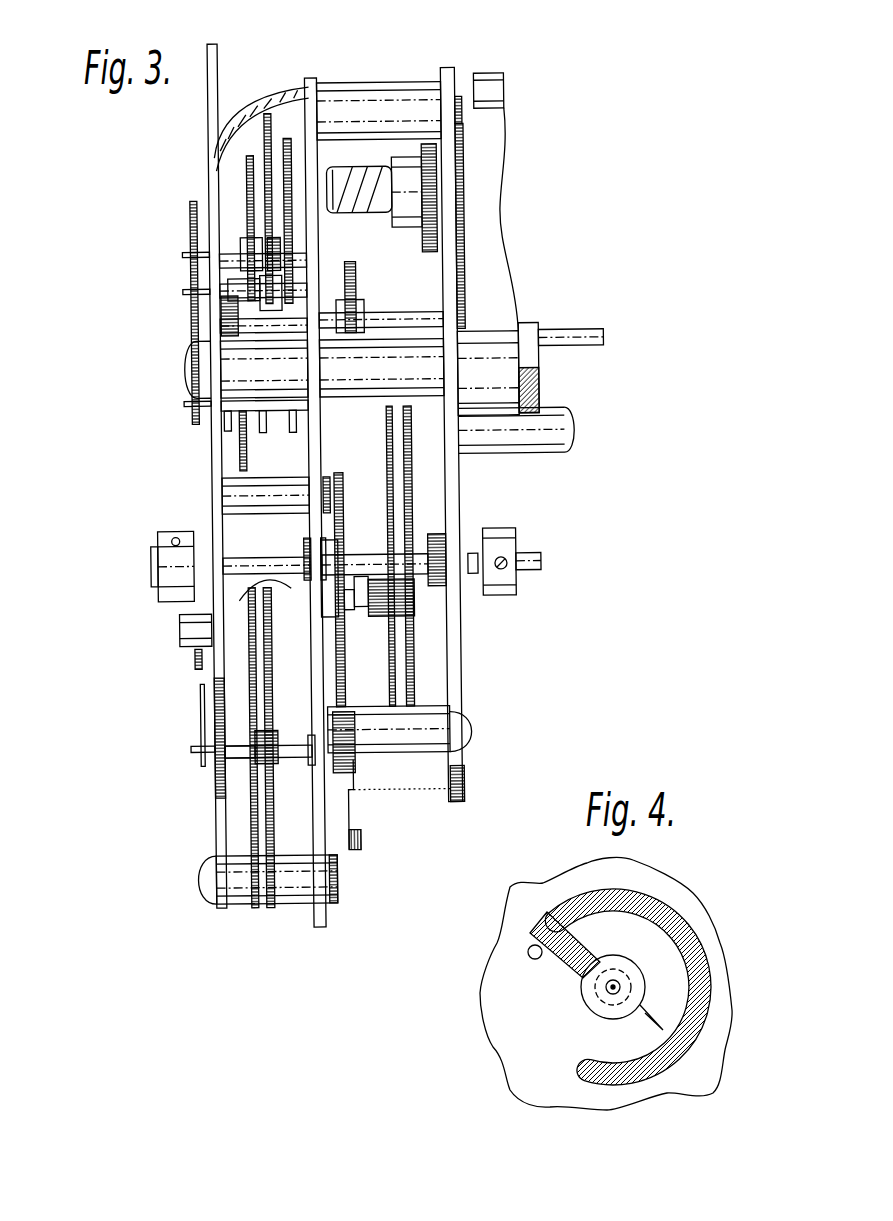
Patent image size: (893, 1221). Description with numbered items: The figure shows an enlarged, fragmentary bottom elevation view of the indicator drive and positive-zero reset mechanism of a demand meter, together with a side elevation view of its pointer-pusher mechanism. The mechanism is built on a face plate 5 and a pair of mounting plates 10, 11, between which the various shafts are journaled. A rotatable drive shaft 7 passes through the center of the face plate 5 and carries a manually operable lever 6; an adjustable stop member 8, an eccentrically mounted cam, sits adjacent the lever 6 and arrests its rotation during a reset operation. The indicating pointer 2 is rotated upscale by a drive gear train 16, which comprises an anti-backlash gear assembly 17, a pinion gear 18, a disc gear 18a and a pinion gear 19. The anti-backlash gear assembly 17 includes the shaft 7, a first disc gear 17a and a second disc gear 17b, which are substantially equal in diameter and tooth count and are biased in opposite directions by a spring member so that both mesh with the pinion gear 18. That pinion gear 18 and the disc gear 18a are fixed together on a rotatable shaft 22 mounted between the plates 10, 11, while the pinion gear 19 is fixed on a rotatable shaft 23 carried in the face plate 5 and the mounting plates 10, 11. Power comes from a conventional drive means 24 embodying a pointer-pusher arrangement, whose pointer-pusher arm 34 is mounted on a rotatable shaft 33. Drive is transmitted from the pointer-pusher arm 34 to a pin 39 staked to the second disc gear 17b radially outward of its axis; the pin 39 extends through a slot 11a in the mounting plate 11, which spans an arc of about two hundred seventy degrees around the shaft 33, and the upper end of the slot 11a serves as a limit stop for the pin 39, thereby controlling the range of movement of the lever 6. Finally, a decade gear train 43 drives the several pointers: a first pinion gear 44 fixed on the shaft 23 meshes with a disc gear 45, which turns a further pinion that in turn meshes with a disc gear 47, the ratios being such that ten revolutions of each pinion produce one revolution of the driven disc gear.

In FIG. 3, the face plate 5 is at (224, 54).
In FIG. 3, the mounting plate 10 is at (314, 80).
In FIG. 3, the mounting plate 11 is at (452, 70).
In FIG. 4, the mounting plate 11 is at (697, 907).
In FIG. 4, the slot 11a is at (712, 1047).
In FIG. 3, the drive shaft 7 is at (157, 566).
In FIG. 3, the stop member 8 is at (178, 630).
In FIG. 3, the lever 6 is at (190, 660).
In FIG. 3, the indicating pointer 2 is at (198, 740).
In FIG. 3, the drive gear train 16 is at (375, 490).
In FIG. 3, the anti-backlash gear assembly 17 is at (432, 672).
In FIG. 3, the first disc gear 17a is at (385, 432).
In FIG. 3, the second disc gear 17b is at (412, 428).
In FIG. 3, the pinion gear 18 is at (400, 600).
In FIG. 3, the disc gear 18a is at (345, 652).
In FIG. 3, the pinion gear 19 is at (352, 768).
In FIG. 3, the shaft 22 is at (405, 603).
In FIG. 3, the shaft 23 is at (432, 762).
In FIG. 3, the drive means 24 is at (594, 572).
In FIG. 3, the pointer-pusher arm 34 is at (505, 530).
In FIG. 4, the pointer-pusher arm 34 is at (585, 965).
In FIG. 4, the pin 39 is at (528, 953).
In FIG. 4, the shaft 33 is at (606, 994).
In FIG. 3, the decade gear train 43 is at (283, 780).
In FIG. 3, the first pinion gear 44 is at (275, 762).
In FIG. 3, the disc gear 45 is at (272, 665).
In FIG. 3, the disc gear 47 is at (284, 582).